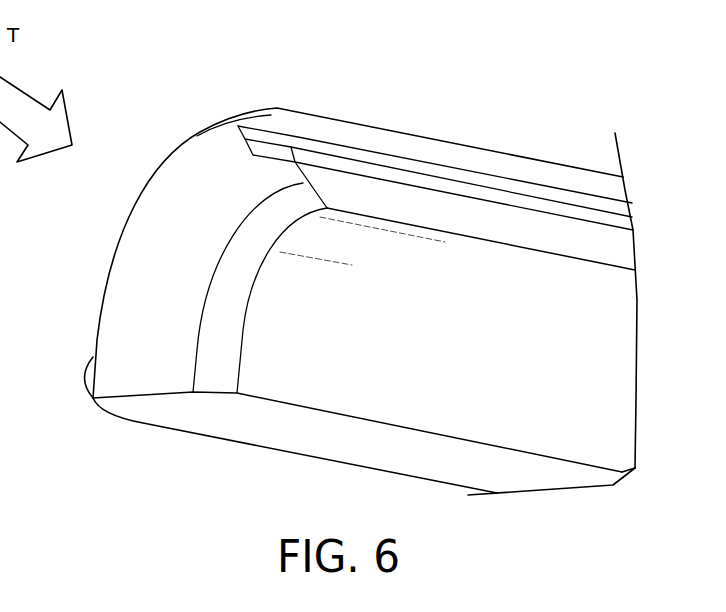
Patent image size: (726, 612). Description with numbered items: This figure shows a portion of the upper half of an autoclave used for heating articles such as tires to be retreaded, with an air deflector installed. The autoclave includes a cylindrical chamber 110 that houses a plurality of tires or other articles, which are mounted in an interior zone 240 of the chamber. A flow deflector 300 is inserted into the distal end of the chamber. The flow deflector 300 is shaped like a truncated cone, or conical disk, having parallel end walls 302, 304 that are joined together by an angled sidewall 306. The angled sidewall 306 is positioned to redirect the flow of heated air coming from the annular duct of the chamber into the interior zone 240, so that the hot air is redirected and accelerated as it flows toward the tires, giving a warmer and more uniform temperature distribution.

The cylindrical chamber 110 is at (357, 128).
The interior zone 240 is at (577, 340).
The flow deflector 300 is at (175, 205).
The end wall 302 is at (240, 247).
The end wall 304 is at (107, 268).
The angled sidewall 306 is at (187, 258).